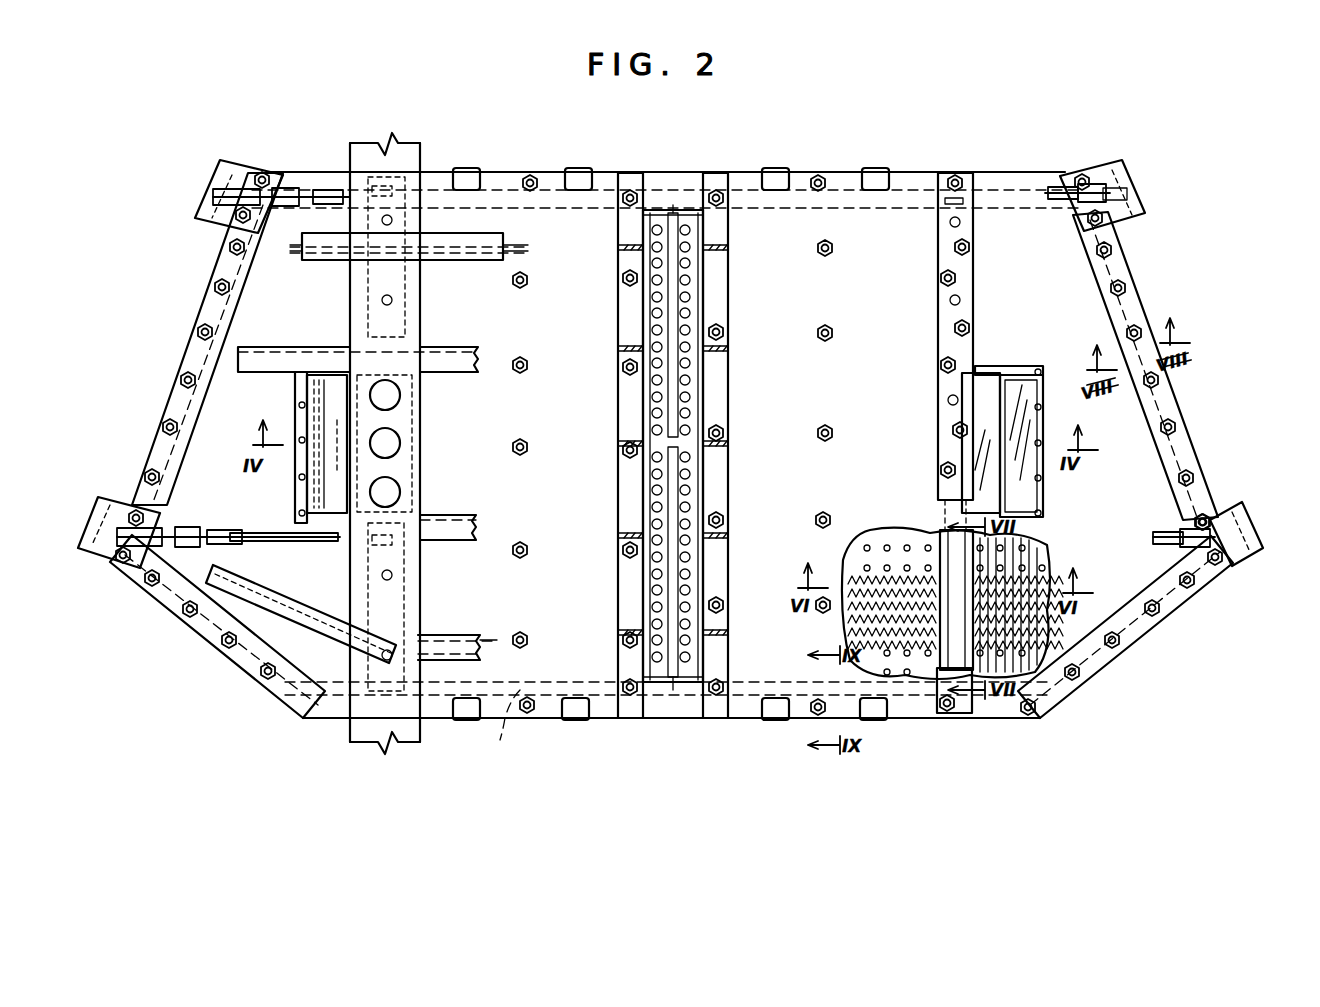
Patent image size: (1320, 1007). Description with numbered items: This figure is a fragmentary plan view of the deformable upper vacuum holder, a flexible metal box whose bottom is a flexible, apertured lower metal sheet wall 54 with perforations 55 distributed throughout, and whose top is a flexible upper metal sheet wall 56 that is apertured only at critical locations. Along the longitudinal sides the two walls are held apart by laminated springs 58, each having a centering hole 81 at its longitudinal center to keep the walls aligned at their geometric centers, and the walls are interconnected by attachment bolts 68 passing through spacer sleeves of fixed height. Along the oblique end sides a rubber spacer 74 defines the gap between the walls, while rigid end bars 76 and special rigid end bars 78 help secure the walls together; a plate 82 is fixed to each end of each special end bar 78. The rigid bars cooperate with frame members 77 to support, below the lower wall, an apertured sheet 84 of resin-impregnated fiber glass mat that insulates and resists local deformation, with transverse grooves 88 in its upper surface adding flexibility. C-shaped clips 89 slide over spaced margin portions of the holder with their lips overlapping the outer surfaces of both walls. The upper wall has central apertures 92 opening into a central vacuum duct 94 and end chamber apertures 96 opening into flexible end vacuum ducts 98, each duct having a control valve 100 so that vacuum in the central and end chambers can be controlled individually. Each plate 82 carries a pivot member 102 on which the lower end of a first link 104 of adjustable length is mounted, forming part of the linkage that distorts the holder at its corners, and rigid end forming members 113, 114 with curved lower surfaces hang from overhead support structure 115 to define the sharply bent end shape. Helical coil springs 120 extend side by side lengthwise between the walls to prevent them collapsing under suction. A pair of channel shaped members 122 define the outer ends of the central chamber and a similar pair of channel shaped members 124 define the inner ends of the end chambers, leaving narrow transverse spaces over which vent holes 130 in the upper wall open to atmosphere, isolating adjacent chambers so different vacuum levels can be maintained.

The lower metal sheet wall 54 is at (865, 540).
The perforations 55 is at (888, 545).
The upper metal sheet wall 56 is at (582, 532).
The laminated springs 58 is at (902, 178).
The attachment bolts 68 is at (820, 178).
The rubber spacer 74 is at (210, 315).
The rigid end bars 76 is at (200, 630).
The frame members 77 is at (597, 720).
The special rigid end bars 78 is at (200, 345).
The centering hole 81 is at (672, 195).
The plate 82 is at (222, 170).
The apertured sheet 84 is at (505, 721).
The transverse grooves 88 is at (1040, 555).
The C-shaped clips 89 is at (578, 170).
The central apertures 92 is at (655, 378).
The central vacuum duct 94 is at (700, 305).
The end chamber apertures 96 is at (400, 448).
The flexible end vacuum ducts 98 is at (300, 392).
The control valve 100 is at (678, 460).
The pivot member 102 is at (1128, 195).
The first link 104 is at (300, 188).
The rigid end forming member 113 is at (232, 570).
The rigid end forming member 114 is at (297, 260).
The overhead support structure 115 is at (470, 262).
The helical coil springs 120 is at (862, 536).
The channel shaped members 122 is at (944, 535).
The channel shaped members 124 is at (990, 545).
The vent holes 130 is at (400, 300).